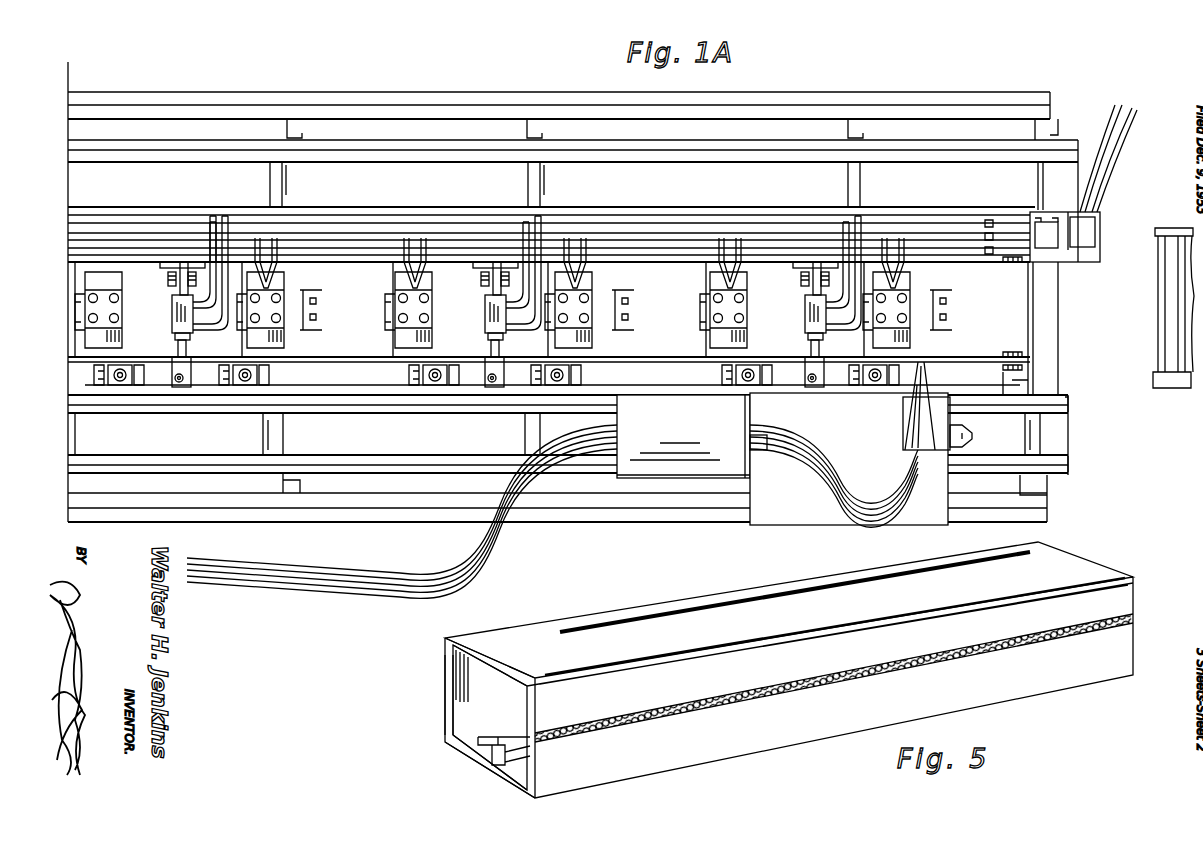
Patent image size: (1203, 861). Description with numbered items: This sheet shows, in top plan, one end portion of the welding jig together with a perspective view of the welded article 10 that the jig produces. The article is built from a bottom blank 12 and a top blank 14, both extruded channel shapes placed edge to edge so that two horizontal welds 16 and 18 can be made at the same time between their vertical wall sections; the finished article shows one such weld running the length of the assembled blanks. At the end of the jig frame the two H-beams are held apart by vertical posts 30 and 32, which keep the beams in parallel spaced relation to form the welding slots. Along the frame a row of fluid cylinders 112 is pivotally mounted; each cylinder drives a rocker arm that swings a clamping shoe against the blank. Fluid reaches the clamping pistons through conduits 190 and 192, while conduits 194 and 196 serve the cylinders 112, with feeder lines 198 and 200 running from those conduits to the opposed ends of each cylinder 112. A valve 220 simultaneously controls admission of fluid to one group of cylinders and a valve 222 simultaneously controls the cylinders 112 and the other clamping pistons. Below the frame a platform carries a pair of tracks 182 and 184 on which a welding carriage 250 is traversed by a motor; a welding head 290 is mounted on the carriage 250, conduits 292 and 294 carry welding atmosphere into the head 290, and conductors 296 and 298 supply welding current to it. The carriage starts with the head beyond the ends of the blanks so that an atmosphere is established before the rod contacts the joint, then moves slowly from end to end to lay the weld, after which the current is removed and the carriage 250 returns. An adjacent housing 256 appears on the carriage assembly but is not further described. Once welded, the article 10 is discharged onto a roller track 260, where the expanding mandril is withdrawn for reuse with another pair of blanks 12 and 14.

In FIG. 5, the channel housing 10 is at (665, 612).
In FIG. 5, the bottom blank 12 is at (445, 738).
In FIG. 5, the top blank 14 is at (445, 645).
In FIG. 5, the horizontal weld 16 is at (445, 695).
In FIG. 5, the horizontal weld 18 is at (548, 735).
In FIG. 1A, the post 30 is at (1003, 364).
In FIG. 1A, the post 32 is at (1020, 263).
In FIG. 1A, the fluid cylinder 112 is at (175, 310).
In FIG. 1A, the track 182 is at (1070, 405).
In FIG. 1A, the track 184 is at (1070, 466).
In FIG. 1A, the conduit 190 is at (313, 250).
In FIG. 1A, the conduit 192 is at (370, 236).
In FIG. 1A, the conduit 194 is at (199, 228).
In FIG. 1A, the conduit 196 is at (150, 222).
In FIG. 1A, the feeder line 198 is at (190, 305).
In FIG. 1A, the feeder line 200 is at (226, 330).
In FIG. 1A, the valve 220 is at (1094, 236).
In FIG. 1A, the valve 222 is at (1052, 226).
In FIG. 1A, the welding carriage 250 is at (800, 521).
In FIG. 1A, the control box 256 is at (657, 455).
In FIG. 1A, the roller track 260 is at (1165, 327).
In FIG. 1A, the welding head 290 is at (918, 398).
In FIG. 1A, the conduit 292 is at (862, 490).
In FIG. 1A, the conduit 294 is at (872, 508).
In FIG. 1A, the conductor 296 is at (800, 458).
In FIG. 1A, the conductor 298 is at (900, 512).